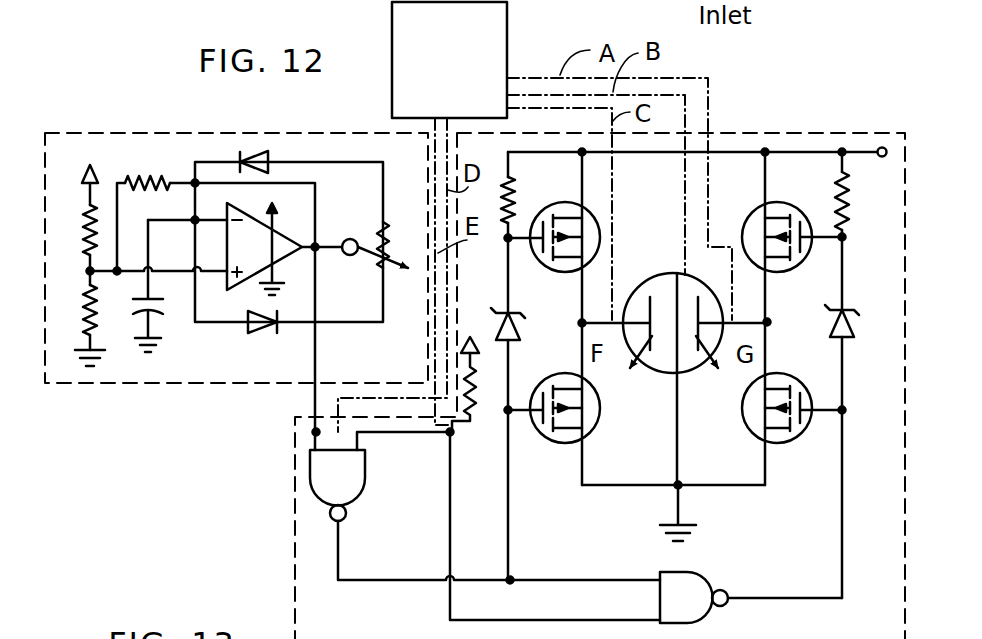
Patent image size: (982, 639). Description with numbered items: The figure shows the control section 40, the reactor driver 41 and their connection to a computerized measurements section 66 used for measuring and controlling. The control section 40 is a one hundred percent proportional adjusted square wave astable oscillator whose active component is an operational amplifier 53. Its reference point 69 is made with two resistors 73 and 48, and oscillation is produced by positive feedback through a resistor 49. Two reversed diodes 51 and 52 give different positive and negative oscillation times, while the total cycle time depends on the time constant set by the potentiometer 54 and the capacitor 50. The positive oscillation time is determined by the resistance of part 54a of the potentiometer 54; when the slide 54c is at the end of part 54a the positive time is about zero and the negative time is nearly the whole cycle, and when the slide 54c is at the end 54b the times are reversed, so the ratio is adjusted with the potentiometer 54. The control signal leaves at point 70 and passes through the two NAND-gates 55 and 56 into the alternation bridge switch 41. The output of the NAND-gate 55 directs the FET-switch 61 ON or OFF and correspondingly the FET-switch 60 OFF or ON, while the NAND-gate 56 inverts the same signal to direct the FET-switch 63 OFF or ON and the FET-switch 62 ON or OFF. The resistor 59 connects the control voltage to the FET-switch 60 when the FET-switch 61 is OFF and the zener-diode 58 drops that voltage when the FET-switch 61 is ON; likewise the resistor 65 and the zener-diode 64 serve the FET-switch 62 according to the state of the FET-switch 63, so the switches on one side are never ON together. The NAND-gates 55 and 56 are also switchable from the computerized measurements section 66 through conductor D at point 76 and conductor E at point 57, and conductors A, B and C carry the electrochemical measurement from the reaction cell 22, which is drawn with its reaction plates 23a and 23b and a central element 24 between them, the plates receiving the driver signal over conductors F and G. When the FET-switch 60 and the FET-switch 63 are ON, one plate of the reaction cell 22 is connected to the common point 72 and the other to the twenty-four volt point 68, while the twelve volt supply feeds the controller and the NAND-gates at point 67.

The reaction cell 22 is at (674, 356).
The reaction plate 23a is at (668, 352).
The reaction plate 23b is at (696, 350).
The sensing element 24 is at (672, 312).
The control section 40 is at (122, 153).
The reactor driver 41 is at (740, 143).
The resistor 48 is at (72, 322).
The resistor 49 is at (153, 168).
The capacitor 50 is at (174, 324).
The diode 51 is at (253, 333).
The diode 52 is at (254, 152).
The operational amplifier 53 is at (278, 243).
The potentiometer 54 is at (362, 260).
The part of potentiometer 54a is at (393, 227).
The end of potentiometer 54b is at (390, 275).
The slide of potentiometer 54c is at (368, 247).
The NAND-gate 55 is at (353, 477).
The NAND-gate 56 is at (693, 593).
The point 57 is at (313, 433).
The zener-diode 58 is at (515, 330).
The resistor 59 is at (523, 203).
The FET-switch 60 is at (585, 230).
The FET-switch 61 is at (565, 443).
The FET-switch 62 is at (777, 212).
The FET-switch 63 is at (778, 437).
The zener-diode 64 is at (858, 330).
The resistor 65 is at (854, 201).
The computerized measurements section 66 is at (505, 50).
The point 67 is at (74, 211).
The +24 Vdc point 68 is at (882, 143).
The reference point 69 is at (128, 282).
The point 70 is at (309, 260).
The common point 72 is at (666, 518).
The resistor 73 is at (74, 202).
The point 76 is at (452, 434).